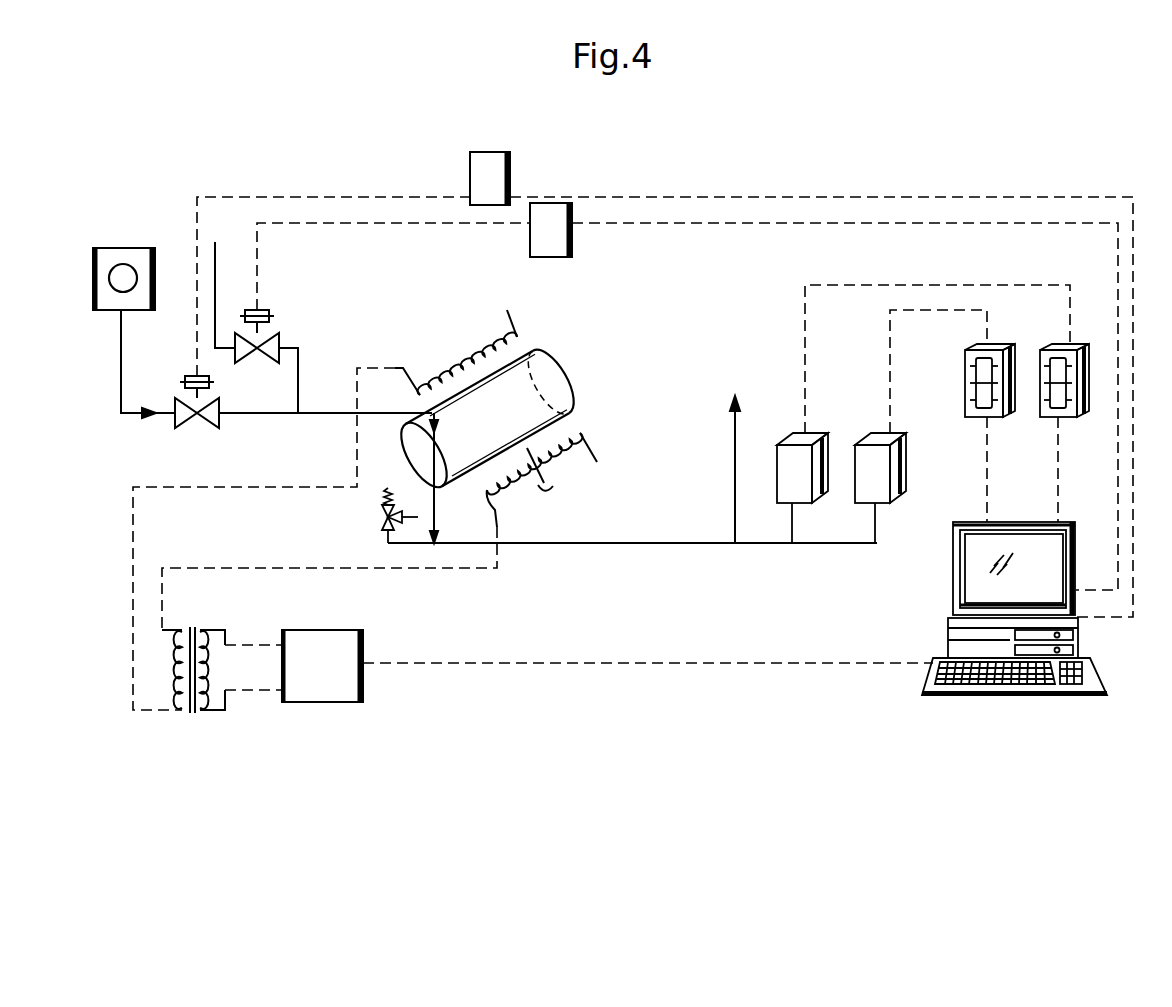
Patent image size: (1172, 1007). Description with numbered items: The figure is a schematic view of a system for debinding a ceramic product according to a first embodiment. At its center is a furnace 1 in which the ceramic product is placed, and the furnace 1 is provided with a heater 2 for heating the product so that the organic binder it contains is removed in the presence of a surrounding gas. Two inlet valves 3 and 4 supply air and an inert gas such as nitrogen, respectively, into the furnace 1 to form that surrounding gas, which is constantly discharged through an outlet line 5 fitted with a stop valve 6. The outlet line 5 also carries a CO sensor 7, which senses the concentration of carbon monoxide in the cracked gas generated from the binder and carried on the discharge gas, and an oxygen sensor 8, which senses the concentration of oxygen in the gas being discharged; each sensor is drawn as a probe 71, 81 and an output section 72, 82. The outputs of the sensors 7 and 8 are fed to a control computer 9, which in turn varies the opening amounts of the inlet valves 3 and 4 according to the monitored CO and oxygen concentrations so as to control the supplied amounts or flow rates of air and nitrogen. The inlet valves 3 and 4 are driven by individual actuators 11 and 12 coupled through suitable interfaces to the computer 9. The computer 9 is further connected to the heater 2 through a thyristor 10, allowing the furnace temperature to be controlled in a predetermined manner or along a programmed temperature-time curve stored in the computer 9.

The furnace 1 is at (557, 374).
The heater 2 is at (520, 331).
The inlet valve 3 is at (176, 425).
The inlet valve 4 is at (281, 336).
The outlet line 5 is at (660, 545).
The stop valve 6 is at (379, 515).
The CO sensor 7 is at (785, 451).
The probe 71 is at (781, 488).
The output section 72 is at (967, 401).
The oxygen sensor 8 is at (898, 451).
The probe 81 is at (897, 487).
The output section 82 is at (1040, 416).
The control computer 9 is at (953, 598).
The thyristor 10 is at (334, 693).
The actuator 11 is at (497, 157).
The actuator 12 is at (556, 210).